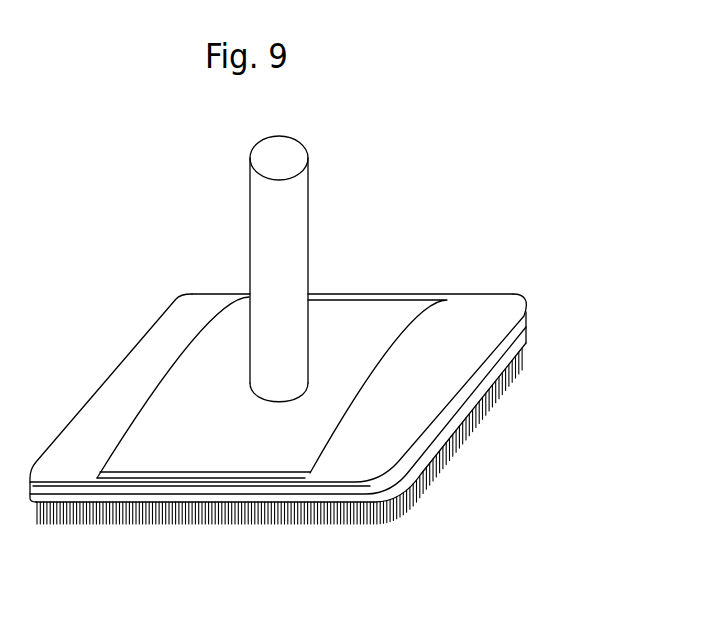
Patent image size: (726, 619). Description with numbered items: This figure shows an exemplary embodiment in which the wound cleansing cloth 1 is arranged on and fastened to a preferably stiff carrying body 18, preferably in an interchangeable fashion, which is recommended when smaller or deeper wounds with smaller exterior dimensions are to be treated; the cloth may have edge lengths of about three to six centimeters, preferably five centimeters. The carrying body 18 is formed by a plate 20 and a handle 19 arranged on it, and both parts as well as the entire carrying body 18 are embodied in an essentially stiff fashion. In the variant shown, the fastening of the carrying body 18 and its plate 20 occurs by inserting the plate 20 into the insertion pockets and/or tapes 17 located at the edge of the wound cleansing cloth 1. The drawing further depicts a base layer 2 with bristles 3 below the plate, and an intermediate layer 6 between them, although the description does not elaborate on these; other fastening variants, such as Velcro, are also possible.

The wound cleansing cloth 1 is at (538, 280).
The base body / bristle carrier 2 is at (513, 357).
The bristles 3 is at (213, 521).
The intermediate layer 6 is at (513, 333).
The insertion pockets and/or tapes 17 is at (196, 308).
The carrying body 18 is at (295, 279).
The handle 19 is at (273, 220).
The plate 20 is at (348, 312).